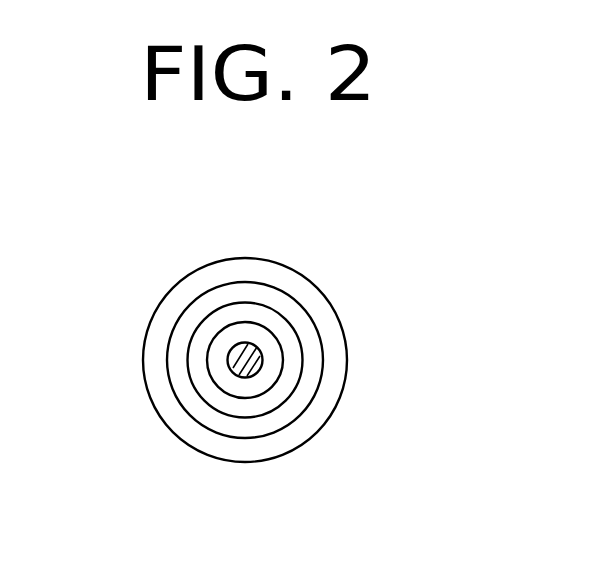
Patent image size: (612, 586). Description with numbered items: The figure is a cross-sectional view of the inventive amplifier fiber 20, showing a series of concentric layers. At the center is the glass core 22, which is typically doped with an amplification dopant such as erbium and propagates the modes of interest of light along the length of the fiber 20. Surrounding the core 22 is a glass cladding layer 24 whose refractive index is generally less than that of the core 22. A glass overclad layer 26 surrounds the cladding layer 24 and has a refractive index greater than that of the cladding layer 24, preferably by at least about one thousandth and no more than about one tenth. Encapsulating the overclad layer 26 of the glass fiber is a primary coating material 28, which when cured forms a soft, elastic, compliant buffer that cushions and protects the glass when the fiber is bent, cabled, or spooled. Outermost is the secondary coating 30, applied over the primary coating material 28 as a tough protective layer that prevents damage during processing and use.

The amplifier fiber 20 is at (389, 245).
The glass core 22 is at (247, 343).
The glass cladding layer 24 is at (263, 375).
The glass overclad layer 26 is at (248, 408).
The primary coating material 28 is at (183, 377).
The secondary coating 30 is at (157, 332).